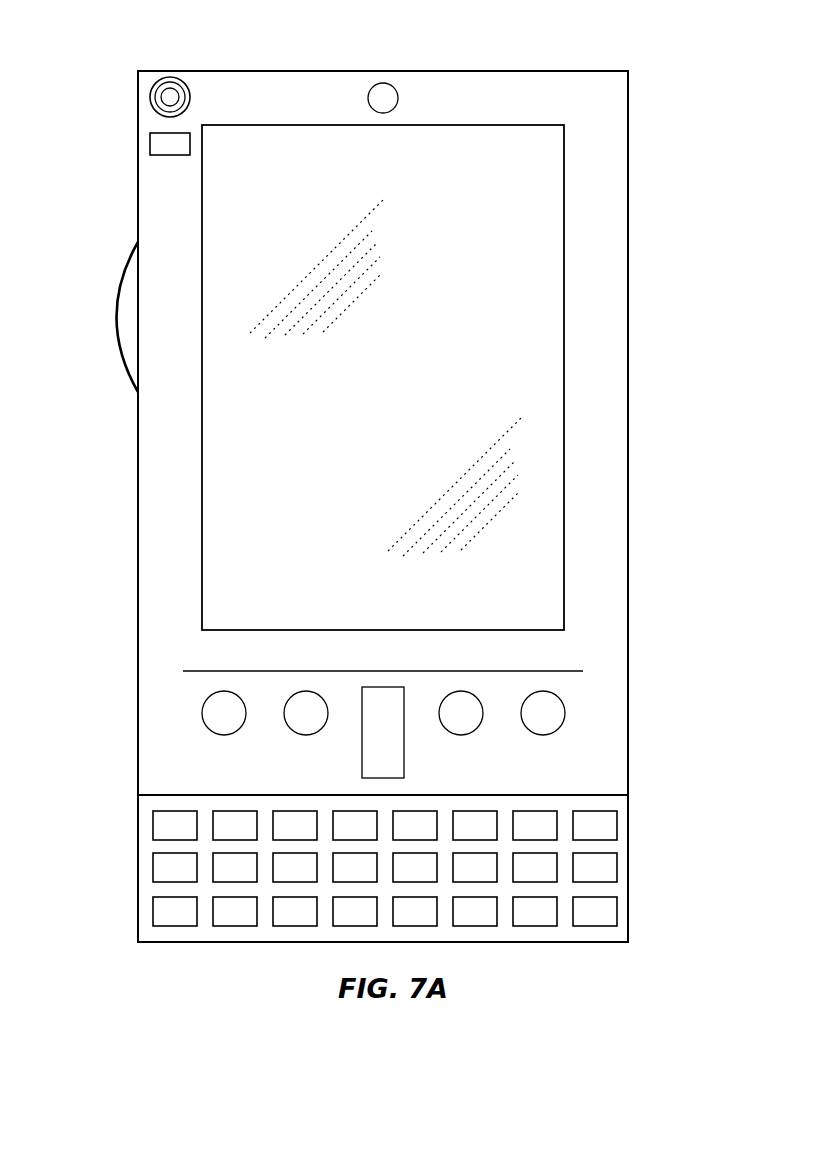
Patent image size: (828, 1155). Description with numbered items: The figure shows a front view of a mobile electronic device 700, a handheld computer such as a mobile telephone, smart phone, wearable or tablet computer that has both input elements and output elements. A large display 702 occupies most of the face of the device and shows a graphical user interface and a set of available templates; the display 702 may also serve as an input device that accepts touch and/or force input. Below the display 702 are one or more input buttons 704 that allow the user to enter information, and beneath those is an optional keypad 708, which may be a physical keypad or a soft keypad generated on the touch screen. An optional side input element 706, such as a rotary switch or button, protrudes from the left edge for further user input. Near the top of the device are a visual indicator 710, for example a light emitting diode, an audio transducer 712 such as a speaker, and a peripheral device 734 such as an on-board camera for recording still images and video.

The mobile electronic device 700 is at (628, 165).
The display 702 is at (237, 498).
The input buttons 704 is at (362, 762).
The side input element 706 is at (116, 317).
The keypad 708 is at (147, 873).
The visual indicator 710 is at (150, 146).
The audio transducer 712 is at (150, 97).
The peripheral device 734 is at (383, 83).